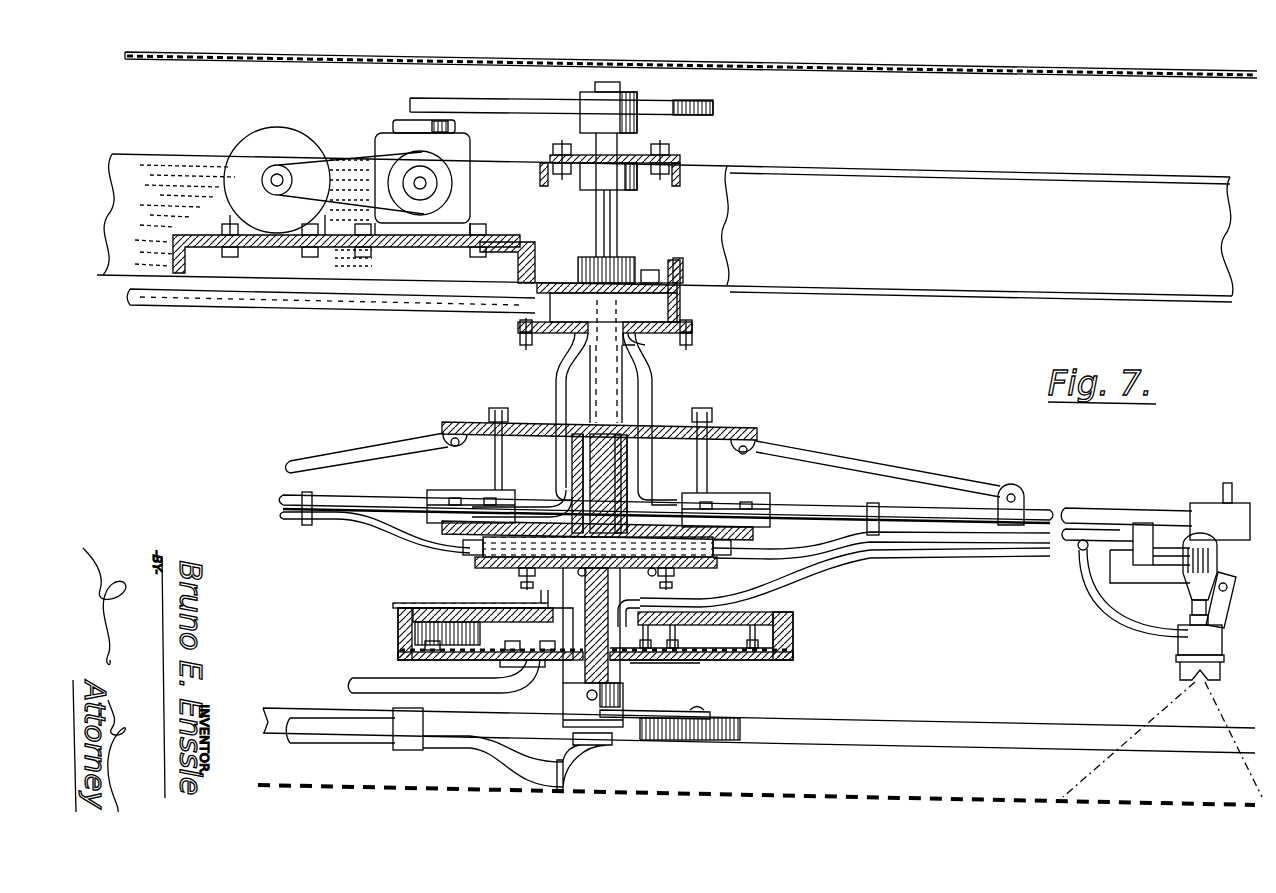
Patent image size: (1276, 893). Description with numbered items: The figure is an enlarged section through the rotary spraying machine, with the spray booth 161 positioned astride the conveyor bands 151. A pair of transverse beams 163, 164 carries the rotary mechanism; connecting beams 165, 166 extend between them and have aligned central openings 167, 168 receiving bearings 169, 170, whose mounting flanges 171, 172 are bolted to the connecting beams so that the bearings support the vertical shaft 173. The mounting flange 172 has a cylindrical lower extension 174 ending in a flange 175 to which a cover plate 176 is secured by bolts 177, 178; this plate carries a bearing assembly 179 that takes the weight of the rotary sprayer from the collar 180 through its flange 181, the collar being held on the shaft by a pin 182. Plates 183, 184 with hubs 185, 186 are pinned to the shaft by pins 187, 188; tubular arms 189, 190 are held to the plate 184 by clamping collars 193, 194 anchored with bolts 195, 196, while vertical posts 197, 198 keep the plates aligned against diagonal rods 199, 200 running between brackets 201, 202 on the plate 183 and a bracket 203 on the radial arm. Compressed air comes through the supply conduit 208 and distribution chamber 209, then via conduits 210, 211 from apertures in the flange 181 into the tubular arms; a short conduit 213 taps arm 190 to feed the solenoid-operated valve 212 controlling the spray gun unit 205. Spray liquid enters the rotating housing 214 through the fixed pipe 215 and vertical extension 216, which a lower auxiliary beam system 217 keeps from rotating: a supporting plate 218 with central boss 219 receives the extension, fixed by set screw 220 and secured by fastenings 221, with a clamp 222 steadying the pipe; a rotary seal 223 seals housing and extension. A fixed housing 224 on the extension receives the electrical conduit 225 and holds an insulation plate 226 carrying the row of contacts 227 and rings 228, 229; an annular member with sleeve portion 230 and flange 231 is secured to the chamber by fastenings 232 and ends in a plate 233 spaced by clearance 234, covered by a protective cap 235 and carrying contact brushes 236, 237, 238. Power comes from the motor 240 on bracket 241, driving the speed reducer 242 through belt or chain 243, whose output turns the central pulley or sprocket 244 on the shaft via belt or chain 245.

The spaced parallel bands 151 is at (982, 797).
The spray booth 161 is at (876, 75).
The transverse beam 163 is at (990, 188).
The transverse beam 164 is at (122, 165).
The connecting beam 165 is at (690, 172).
The connecting beam 166 is at (690, 265).
The central opening 167 is at (636, 178).
The central opening 168 is at (640, 268).
The bearing 169 is at (590, 178).
The bearing 170 is at (603, 262).
The mounting flange 171 is at (630, 157).
The mounting flange 172 is at (590, 266).
The vertical shaft 173 is at (618, 225).
The cylindrical lower extension 174 is at (656, 312).
The flange 175 is at (690, 326).
The cover plate 176 is at (700, 339).
The bolt 177 is at (686, 346).
The bolt 178 is at (525, 345).
The bearing assembly 179 is at (546, 341).
The collar 180 is at (621, 346).
The flange 181 is at (530, 291).
The pin 182 is at (590, 348).
The plate 183 is at (758, 429).
The plate 184 is at (752, 531).
The hub 185 is at (628, 446).
The hub 186 is at (626, 496).
The pin 187 is at (572, 455).
The pin 188 is at (568, 496).
The tubular arm 189 is at (370, 493).
The tubular arm 190 is at (1097, 507).
The clamping collar 193 is at (436, 490).
The clamping collar 194 is at (715, 505).
The bolt 195 is at (490, 498).
The bolt 196 is at (745, 503).
The vertical post 197 is at (708, 471).
The vertical post 198 is at (497, 436).
The diagonal rod 199 is at (846, 470).
The diagonal rod 200 is at (387, 446).
The bracket 201 is at (760, 446).
The bracket 202 is at (446, 431).
The bracket 203 is at (1020, 490).
The spray gun unit 205 is at (1216, 641).
The supply conduit 208 is at (286, 306).
The distribution chamber 209 is at (676, 300).
The conduit 210 is at (655, 396).
The conduit 211 is at (557, 401).
The solenoid-operated valve 212 is at (1146, 524).
The short conduit 213 is at (1112, 545).
The housing 214 is at (721, 564).
The pipe 215 is at (350, 742).
The vertical extension 216 is at (621, 668).
The lower auxiliary beam system 217 is at (902, 722).
The supporting plate 218 is at (667, 722).
The central boss 219 is at (621, 700).
The set screw 220 is at (590, 696).
The fastening 221 is at (702, 708).
The clamp 222 is at (410, 745).
The rotary seal 223 is at (551, 556).
The fixed housing 224 is at (792, 656).
The electrical conduit 225 is at (375, 680).
The plate of insulation material 226 is at (405, 645).
The row of contacts 227 is at (430, 630).
The ring 228 is at (462, 644).
The ring 229 is at (478, 646).
The sleeve portion 230 is at (670, 576).
The flange 231 is at (668, 580).
The fastening 232 is at (523, 577).
The plate 233 is at (395, 606).
The clearance 234 is at (780, 606).
The protective cap 235 is at (792, 623).
The contact brush 236 is at (760, 640).
The contact brush 237 is at (726, 661).
The contact brush 238 is at (682, 662).
The motor 240 is at (270, 133).
The bracket 241 is at (200, 233).
The speed reducer 242 is at (398, 128).
The belt or chain 243 is at (336, 157).
The central pulley or sprocket 244 is at (700, 101).
The belt or chain 245 is at (466, 97).